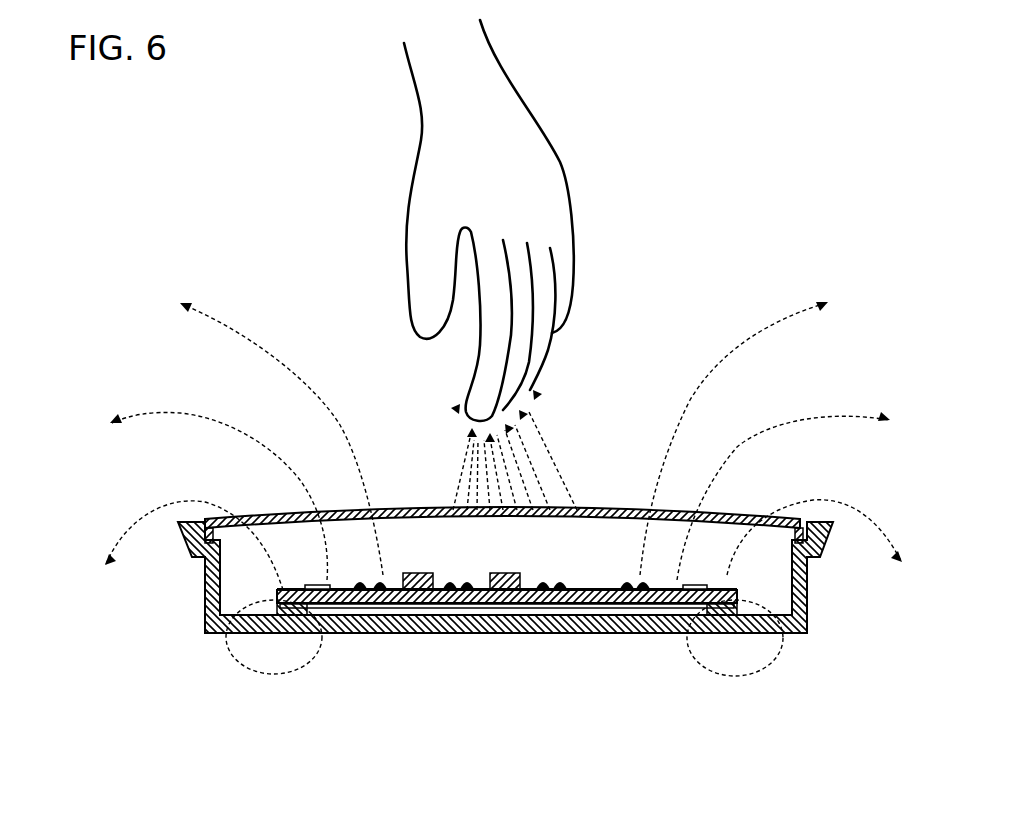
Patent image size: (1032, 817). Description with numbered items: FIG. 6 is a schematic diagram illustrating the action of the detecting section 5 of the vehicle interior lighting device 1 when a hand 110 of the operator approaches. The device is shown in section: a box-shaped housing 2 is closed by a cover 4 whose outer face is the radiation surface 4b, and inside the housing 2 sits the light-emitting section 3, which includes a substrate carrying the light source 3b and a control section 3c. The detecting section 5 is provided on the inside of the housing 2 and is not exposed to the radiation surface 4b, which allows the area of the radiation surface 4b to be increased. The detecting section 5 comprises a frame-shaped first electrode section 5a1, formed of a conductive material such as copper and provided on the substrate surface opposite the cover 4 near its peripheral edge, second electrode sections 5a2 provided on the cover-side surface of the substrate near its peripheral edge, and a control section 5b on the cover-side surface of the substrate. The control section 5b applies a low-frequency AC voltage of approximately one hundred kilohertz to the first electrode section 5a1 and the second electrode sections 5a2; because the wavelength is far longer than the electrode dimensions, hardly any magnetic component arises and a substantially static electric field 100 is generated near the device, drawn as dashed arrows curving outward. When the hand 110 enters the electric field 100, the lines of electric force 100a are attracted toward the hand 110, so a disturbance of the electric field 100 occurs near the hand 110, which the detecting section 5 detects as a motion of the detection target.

The vehicle interior lighting device 1 is at (473, 560).
The housing 2 is at (805, 614).
The light-emitting section 3 is at (486, 493).
The light source 3b is at (443, 512).
The control section 3c is at (540, 512).
The cover 4 is at (662, 514).
The radiation surface 4b is at (607, 510).
The detecting section 5 is at (501, 573).
The first electrode section 5a1 is at (358, 603).
The second electrode sections 5a2 is at (317, 583).
The control section 5b is at (417, 572).
The electric field 100 is at (281, 331).
The lines of electric force 100a is at (556, 440).
The hand 110 is at (500, 137).